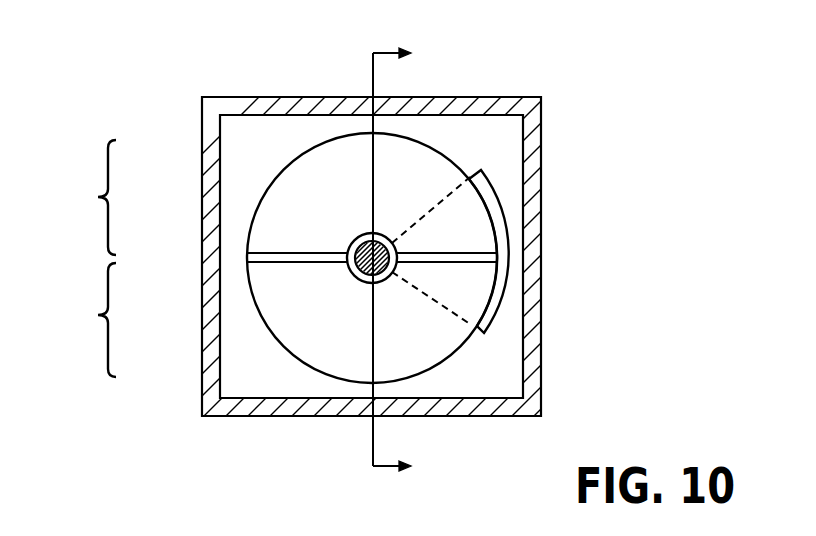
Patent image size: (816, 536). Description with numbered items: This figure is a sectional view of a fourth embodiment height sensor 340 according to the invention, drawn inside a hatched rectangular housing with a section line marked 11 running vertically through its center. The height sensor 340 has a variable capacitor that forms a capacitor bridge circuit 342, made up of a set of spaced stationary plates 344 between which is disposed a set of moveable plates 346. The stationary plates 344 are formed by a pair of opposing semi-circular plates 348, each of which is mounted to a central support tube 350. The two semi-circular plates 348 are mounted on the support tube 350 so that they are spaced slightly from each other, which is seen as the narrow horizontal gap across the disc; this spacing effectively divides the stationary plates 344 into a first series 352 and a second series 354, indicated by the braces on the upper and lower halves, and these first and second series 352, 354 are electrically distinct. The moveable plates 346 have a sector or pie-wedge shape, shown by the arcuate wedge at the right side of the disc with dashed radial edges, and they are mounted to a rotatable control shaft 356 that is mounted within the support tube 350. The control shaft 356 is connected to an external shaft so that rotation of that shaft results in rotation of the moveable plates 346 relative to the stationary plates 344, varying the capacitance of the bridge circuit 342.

The height sensor 340 is at (572, 46).
The capacitor bridge circuit 342 is at (245, 132).
The stationary plates 344 is at (335, 137).
The moveable plates 346 is at (502, 199).
The semi-circular plates 348 is at (266, 188).
The support tube 350 is at (357, 279).
The first series 352 is at (80, 197).
The second series 354 is at (80, 320).
The rotatable control shaft 356 is at (390, 273).
The section line 11- 11 is at (394, 262).